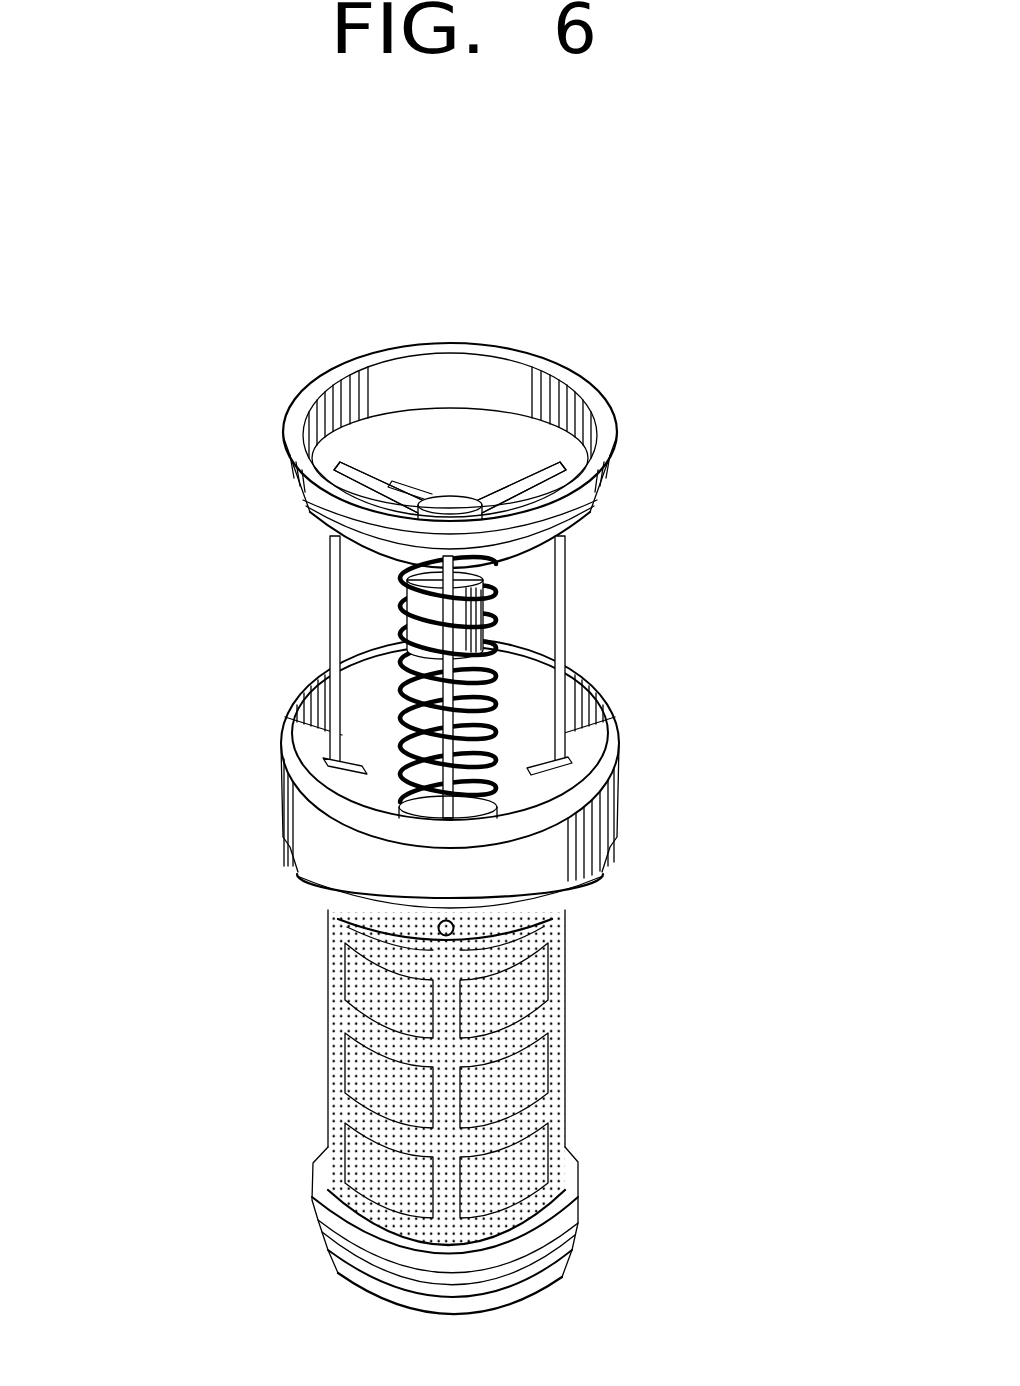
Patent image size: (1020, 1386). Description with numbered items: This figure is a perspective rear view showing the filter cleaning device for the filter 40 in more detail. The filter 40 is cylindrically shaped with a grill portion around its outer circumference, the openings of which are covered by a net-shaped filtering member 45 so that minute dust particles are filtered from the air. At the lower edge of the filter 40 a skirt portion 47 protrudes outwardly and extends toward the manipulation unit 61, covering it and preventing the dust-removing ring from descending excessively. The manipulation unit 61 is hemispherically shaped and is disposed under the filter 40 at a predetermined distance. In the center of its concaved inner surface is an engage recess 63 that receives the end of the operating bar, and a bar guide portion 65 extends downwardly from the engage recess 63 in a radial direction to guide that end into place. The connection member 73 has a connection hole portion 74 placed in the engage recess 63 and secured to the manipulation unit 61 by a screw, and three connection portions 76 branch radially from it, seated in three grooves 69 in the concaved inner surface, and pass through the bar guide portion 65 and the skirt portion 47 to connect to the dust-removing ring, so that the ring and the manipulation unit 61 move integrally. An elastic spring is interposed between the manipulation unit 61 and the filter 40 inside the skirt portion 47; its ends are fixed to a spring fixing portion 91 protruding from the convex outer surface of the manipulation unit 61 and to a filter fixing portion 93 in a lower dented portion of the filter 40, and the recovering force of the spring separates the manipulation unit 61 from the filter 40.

The filter 40 is at (620, 1054).
The net-shaped filtering member 45 is at (350, 992).
The skirt portion 47 is at (290, 790).
The manipulation unit 61 is at (588, 243).
The engage recess 63 is at (452, 500).
The bar guide portion 65 is at (553, 400).
The grooves 69 is at (352, 442).
The connection member 73 is at (173, 490).
The connection hole portion 74 is at (412, 496).
The connection portions 76 is at (330, 597).
The spring fixing portion 91 is at (487, 603).
The filter fixing portion 93 is at (483, 815).